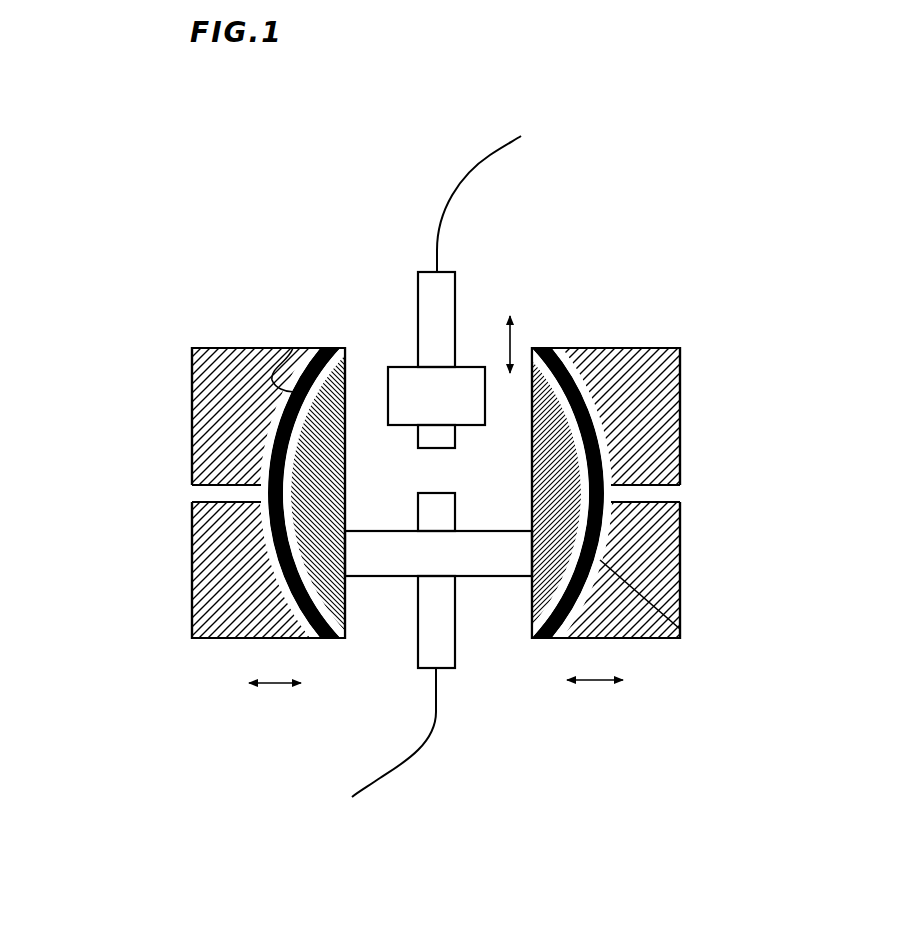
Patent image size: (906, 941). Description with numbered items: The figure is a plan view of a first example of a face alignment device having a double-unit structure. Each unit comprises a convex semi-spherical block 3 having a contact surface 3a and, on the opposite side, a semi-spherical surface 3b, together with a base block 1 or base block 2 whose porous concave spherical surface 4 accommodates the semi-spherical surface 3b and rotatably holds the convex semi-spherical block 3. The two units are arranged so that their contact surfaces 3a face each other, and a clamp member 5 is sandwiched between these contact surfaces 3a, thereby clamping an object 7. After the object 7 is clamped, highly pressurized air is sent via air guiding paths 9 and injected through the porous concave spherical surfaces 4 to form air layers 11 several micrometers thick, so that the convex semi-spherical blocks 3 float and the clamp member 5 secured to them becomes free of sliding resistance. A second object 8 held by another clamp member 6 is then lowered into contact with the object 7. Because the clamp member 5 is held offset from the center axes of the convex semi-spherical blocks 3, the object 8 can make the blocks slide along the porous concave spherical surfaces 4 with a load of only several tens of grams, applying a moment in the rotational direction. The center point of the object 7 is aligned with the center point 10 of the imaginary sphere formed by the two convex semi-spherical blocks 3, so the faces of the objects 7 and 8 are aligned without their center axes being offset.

The base block 1 is at (208, 639).
The base block 2 is at (627, 639).
The convex semi-spherical block 3 is at (262, 548).
The contact surface 3a is at (345, 440).
The semi-spherical surface 3b is at (266, 520).
The porous concave spherical surface 4 is at (270, 432).
The clamp member 5 is at (378, 598).
The clamp member 6 is at (397, 366).
The object 7 is at (457, 650).
The object 8 is at (457, 322).
The air guiding path 9 is at (192, 492).
The center point 10 is at (440, 493).
The air layer 11 is at (293, 348).